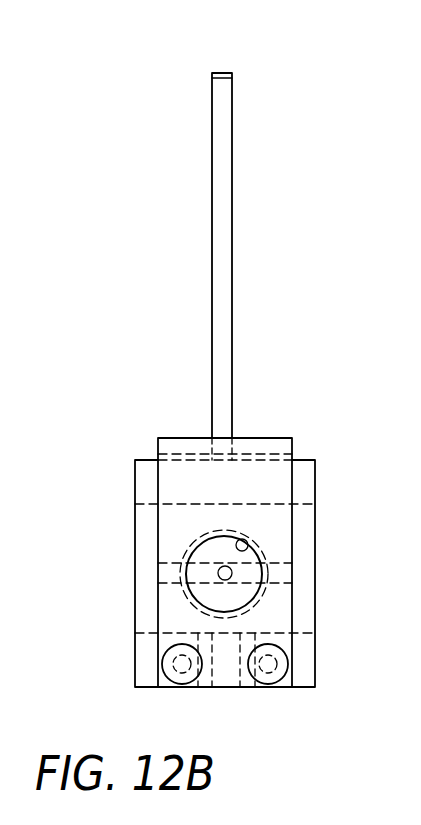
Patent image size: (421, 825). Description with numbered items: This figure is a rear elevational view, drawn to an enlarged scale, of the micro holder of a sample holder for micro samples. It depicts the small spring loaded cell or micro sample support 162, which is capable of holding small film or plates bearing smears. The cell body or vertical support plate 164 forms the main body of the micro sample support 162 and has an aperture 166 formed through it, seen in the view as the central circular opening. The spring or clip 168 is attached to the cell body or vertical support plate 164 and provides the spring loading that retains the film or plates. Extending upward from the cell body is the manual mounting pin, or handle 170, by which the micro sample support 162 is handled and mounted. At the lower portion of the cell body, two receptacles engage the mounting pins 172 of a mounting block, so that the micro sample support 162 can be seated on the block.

The micro sample support 162 is at (287, 392).
The vertical support plate 164 is at (308, 570).
The aperture 166 is at (247, 542).
The spring or clip 168 is at (292, 438).
The handle 170 is at (232, 73).
The mounting pins 172 is at (265, 672).